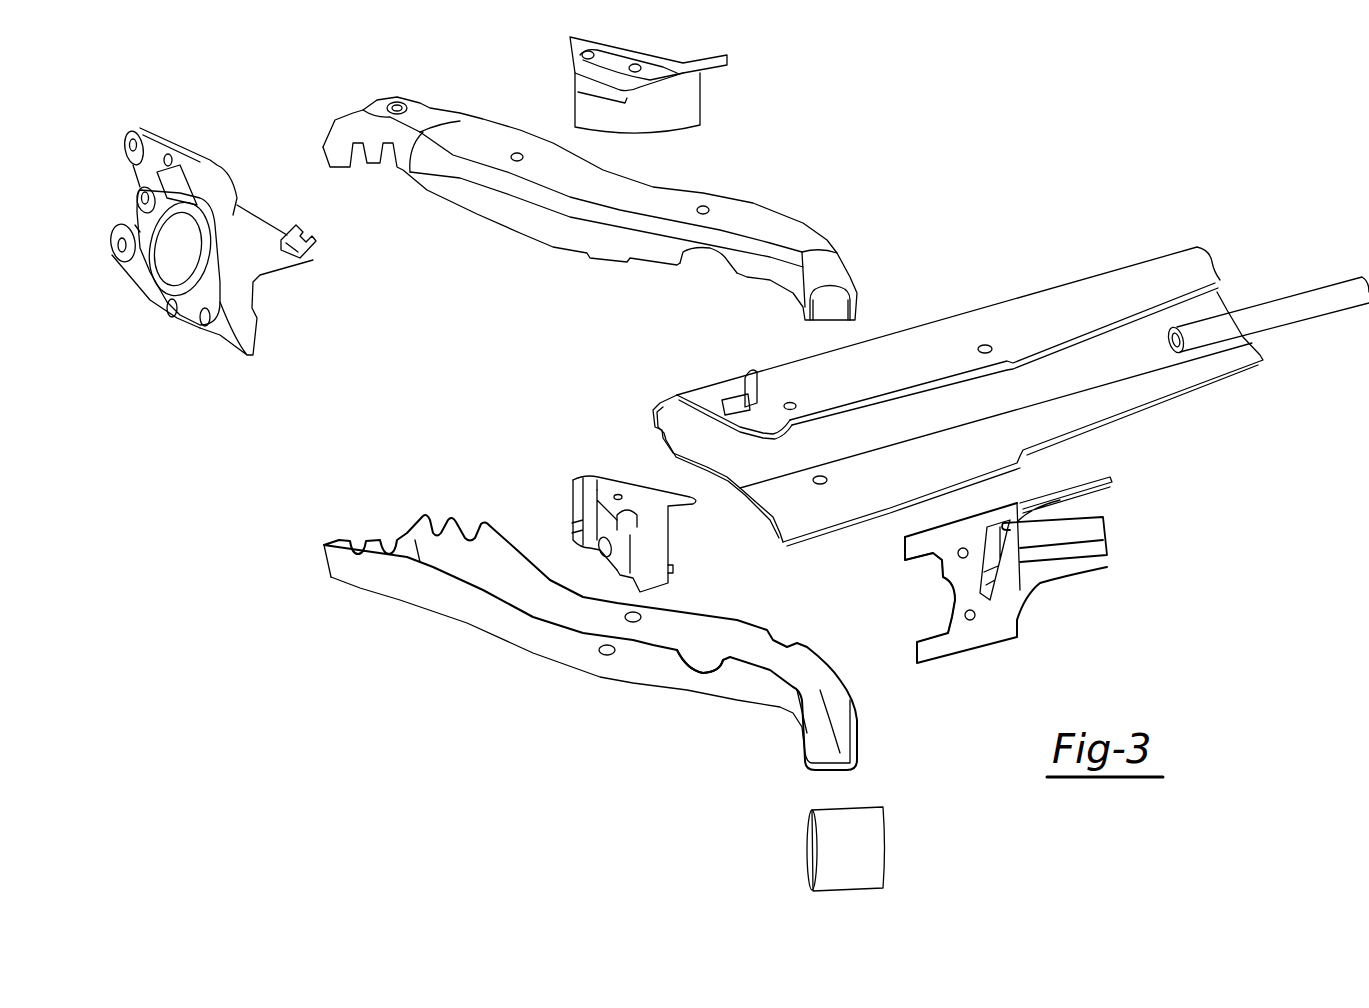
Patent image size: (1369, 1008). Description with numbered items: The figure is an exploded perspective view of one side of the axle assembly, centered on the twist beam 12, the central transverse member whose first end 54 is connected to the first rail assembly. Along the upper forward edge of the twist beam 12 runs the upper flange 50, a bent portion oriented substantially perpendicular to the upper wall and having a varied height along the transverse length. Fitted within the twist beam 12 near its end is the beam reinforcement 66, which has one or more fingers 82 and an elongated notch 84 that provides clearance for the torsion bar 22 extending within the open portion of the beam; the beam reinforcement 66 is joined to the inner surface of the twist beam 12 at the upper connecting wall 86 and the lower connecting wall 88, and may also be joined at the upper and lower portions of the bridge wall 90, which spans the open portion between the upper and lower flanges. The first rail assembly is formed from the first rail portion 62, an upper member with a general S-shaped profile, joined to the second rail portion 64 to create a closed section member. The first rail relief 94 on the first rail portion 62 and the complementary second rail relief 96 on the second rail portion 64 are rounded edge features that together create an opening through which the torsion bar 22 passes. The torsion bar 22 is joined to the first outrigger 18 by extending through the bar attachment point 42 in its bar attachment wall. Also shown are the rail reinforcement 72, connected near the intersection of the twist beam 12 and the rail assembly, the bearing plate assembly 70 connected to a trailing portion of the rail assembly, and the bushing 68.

The twist beam 12 is at (1062, 300).
The first outrigger 18 is at (633, 497).
The torsion bar 22 is at (1307, 300).
The bar attachment point 42 is at (600, 548).
The upper flange 50 is at (888, 390).
The first end 54 is at (705, 398).
The first rail portion 62 is at (483, 140).
The second rail portion 64 is at (477, 608).
The beam reinforcement 66 is at (1007, 622).
The bushing 68 is at (870, 850).
The bearing plate assembly 70 is at (217, 337).
The rail reinforcement 72 is at (683, 108).
The fingers 82 is at (1097, 492).
The elongated notch 84 is at (1093, 510).
The upper connecting wall 86 is at (1080, 483).
The lower connecting wall 88 is at (1100, 553).
The bridge wall 90 is at (913, 543).
The first rail relief 94 is at (693, 263).
The second rail relief 96 is at (680, 662).